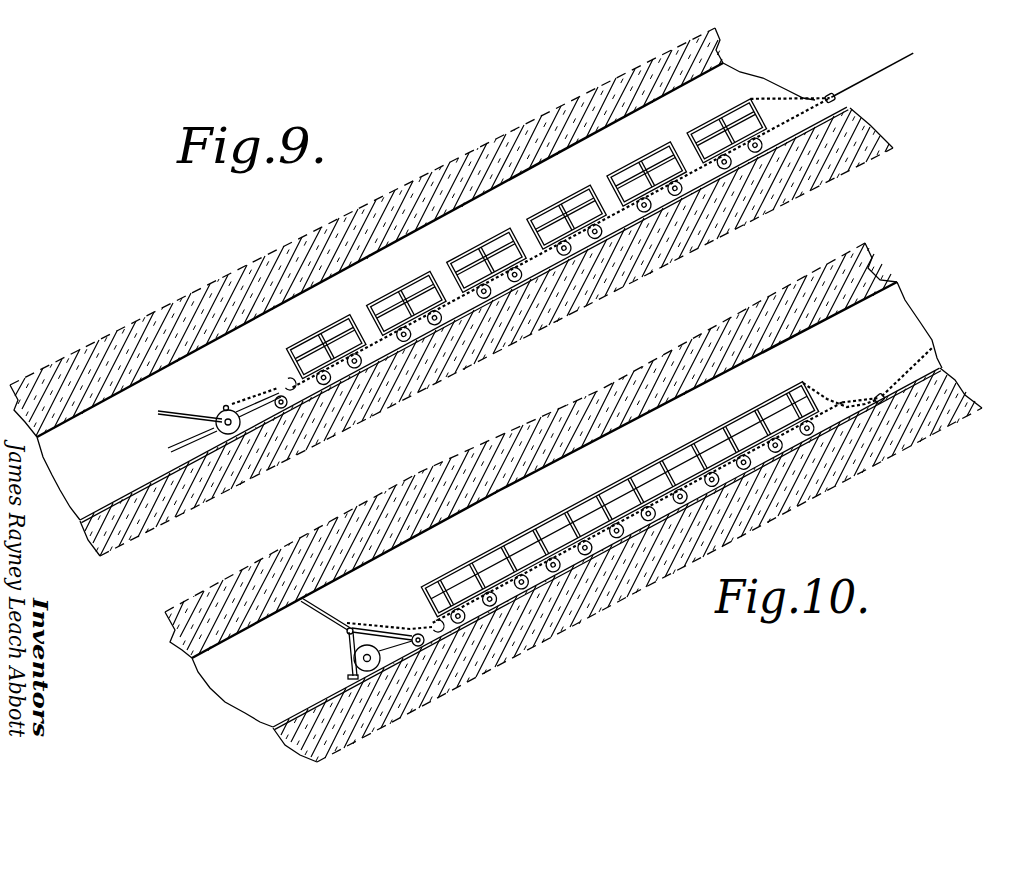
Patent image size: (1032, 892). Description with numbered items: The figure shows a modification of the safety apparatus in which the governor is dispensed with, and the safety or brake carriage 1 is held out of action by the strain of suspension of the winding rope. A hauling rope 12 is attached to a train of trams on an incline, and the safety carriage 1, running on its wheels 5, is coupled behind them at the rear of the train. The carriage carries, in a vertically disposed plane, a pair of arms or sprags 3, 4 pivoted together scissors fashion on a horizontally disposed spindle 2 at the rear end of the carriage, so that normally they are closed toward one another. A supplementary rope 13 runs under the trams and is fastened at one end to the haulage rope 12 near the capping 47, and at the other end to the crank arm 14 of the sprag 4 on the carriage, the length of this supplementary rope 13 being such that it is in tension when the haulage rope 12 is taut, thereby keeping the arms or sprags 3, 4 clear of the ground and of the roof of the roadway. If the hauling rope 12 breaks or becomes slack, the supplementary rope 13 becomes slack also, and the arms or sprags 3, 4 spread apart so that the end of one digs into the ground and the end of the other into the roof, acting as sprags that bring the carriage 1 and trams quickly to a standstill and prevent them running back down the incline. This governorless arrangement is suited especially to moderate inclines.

In FIG. 9, the safety or brake carriage 1 is at (247, 412).
In FIG. 10, the safety or brake carriage 1 is at (398, 646).
In FIG. 10, the horizontal spindle 2 is at (347, 632).
In FIG. 9, the arm or sprag 3 is at (193, 416).
In FIG. 10, the arm or sprag 3 is at (317, 609).
In FIG. 9, the arm or sprag 4 is at (183, 441).
In FIG. 10, the arm or sprag 4 is at (348, 677).
In FIG. 9, the wheels 5 is at (181, 452).
In FIG. 10, the wheels 5 is at (350, 658).
In FIG. 9, the hauling rope 12 is at (883, 75).
In FIG. 10, the hauling rope 12 is at (907, 366).
In FIG. 9, the supplementary rope 13 is at (258, 397).
In FIG. 10, the supplementary rope 13 is at (356, 622).
In FIG. 9, the crank arm 14 is at (223, 409).
In FIG. 9, the capping 47 is at (834, 96).
In FIG. 10, the capping 47 is at (877, 399).